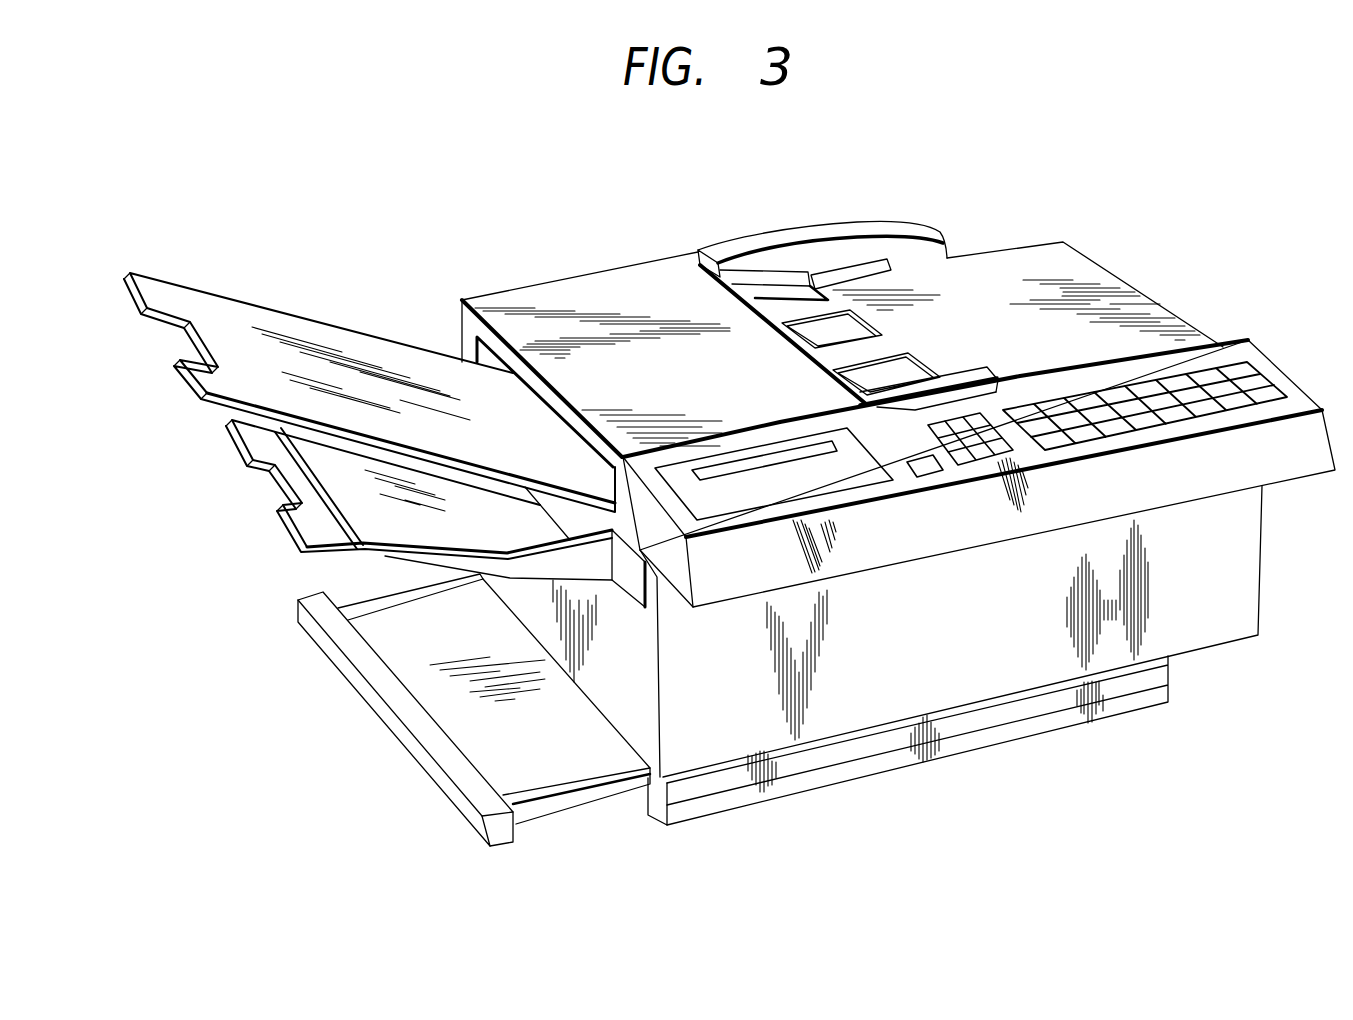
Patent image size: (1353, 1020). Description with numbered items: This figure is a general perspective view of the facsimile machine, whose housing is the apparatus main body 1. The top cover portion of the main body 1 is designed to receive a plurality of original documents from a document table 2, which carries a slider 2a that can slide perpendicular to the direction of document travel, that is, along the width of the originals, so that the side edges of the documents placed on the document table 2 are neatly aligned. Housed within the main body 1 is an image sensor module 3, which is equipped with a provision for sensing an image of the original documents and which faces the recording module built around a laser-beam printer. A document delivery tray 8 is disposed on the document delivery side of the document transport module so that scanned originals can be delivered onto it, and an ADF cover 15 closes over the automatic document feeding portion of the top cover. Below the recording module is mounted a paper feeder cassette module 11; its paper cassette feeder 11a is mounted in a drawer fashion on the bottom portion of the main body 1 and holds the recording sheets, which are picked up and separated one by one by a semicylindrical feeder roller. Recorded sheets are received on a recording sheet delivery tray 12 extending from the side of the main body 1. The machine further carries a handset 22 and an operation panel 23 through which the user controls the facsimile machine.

The main body 1 is at (1265, 586).
The document table 2 is at (1070, 265).
The slider 2a is at (962, 378).
The image sensor module 3 is at (510, 284).
The document delivery tray 8 is at (352, 340).
The paper feeder cassette module 11 is at (652, 814).
The paper cassette feeder 11a is at (425, 734).
The recording sheet delivery tray 12 is at (313, 527).
The ADF cover 15 is at (627, 288).
The handset 22 is at (844, 229).
The operation panel 23 is at (1250, 388).